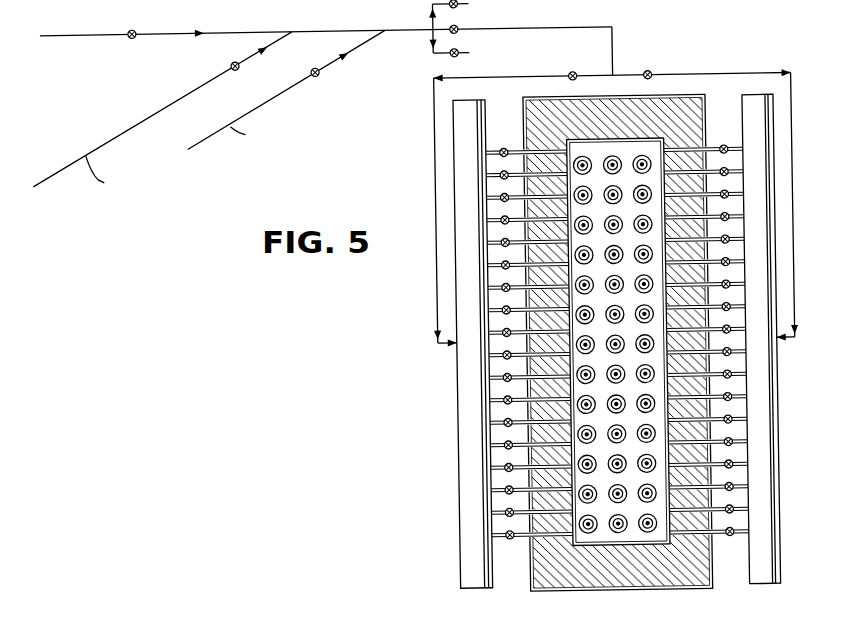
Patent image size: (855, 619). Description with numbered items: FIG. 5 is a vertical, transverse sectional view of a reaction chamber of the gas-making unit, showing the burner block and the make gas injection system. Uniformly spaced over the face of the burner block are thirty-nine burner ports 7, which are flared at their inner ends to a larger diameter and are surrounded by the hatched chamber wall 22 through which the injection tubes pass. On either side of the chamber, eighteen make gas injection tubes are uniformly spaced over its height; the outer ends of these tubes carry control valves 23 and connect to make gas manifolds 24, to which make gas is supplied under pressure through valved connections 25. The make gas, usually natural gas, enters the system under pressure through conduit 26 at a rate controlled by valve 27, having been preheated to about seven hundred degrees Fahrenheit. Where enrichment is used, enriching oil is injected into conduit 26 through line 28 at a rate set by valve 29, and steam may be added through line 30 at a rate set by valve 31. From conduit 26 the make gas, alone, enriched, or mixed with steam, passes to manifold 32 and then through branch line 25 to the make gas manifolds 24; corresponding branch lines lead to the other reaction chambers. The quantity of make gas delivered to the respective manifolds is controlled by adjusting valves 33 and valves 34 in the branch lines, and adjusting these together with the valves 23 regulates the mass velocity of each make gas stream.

The burner ports 7 is at (612, 533).
The refractory furnace wall 22 is at (696, 152).
The control valves 23 is at (504, 149).
The make gas manifolds 24 is at (453, 418).
The valved connections 25 is at (462, 2).
The conduit 26 is at (68, 31).
The valve 27 is at (127, 30).
The line 28 is at (245, 109).
The valve 29 is at (313, 64).
The line 30 is at (139, 115).
The valve 31 is at (232, 58).
The manifold 32 is at (432, 36).
The valves 33 is at (459, 29).
The valves 34 is at (573, 71).